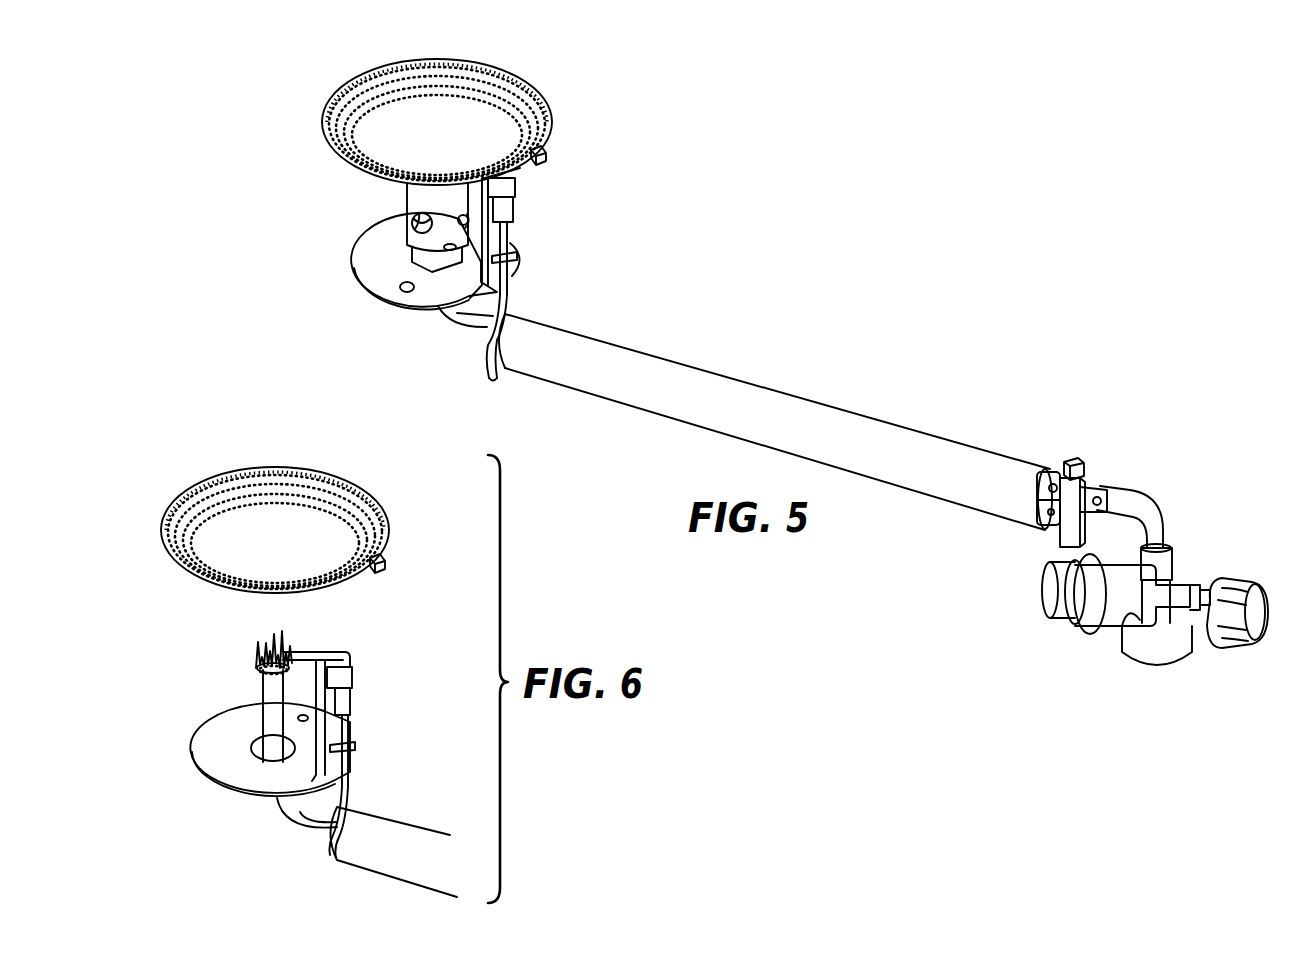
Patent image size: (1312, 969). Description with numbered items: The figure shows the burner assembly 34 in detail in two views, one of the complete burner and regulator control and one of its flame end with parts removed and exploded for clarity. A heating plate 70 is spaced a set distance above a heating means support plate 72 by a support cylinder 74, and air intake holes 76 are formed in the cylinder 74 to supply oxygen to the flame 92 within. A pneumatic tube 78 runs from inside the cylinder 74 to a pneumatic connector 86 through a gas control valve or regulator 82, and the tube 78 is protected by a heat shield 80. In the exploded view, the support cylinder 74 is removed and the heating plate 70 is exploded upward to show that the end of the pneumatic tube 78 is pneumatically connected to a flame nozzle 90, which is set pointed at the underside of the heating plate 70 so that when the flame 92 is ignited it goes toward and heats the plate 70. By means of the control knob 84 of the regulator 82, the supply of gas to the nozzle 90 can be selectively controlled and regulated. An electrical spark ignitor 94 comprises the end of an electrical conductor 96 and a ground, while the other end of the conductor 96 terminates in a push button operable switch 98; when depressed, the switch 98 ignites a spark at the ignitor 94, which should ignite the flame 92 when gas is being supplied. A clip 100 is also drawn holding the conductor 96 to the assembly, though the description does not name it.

In FIG. 5, the burner assembly 34 is at (800, 270).
In FIG. 5, the heating plate 70 is at (498, 100).
In FIG. 6, the heating plate 70 is at (237, 490).
In FIG. 5, the heating means support plate 72 is at (358, 275).
In FIG. 6, the heating means support plate 72 is at (220, 726).
In FIG. 5, the support cylinder 74 is at (402, 202).
In FIG. 5, the air intake holes 76 is at (414, 224).
In FIG. 5, the pneumatic tube 78 is at (462, 326).
In FIG. 6, the pneumatic tube 78 is at (303, 808).
In FIG. 5, the heat shield 80 is at (922, 440).
In FIG. 6, the heat shield 80 is at (403, 825).
In FIG. 5, the gas control valve or regulator 82 is at (1197, 553).
In FIG. 5, the control knob 84 is at (1240, 578).
In FIG. 5, the pneumatic connector 86 is at (1133, 650).
In FIG. 6, the flame nozzle 90 is at (256, 668).
In FIG. 6, the flame 92 is at (260, 650).
In FIG. 6, the electrical spark ignitor 94 is at (323, 654).
In FIG. 5, the electrical conductor 96 is at (512, 286).
In FIG. 6, the electrical conductor 96 is at (348, 782).
In FIG. 5, the push button operable switch 98 is at (1071, 462).
In FIG. 5, the clip 100 is at (510, 237).
In FIG. 6, the clip 100 is at (334, 727).